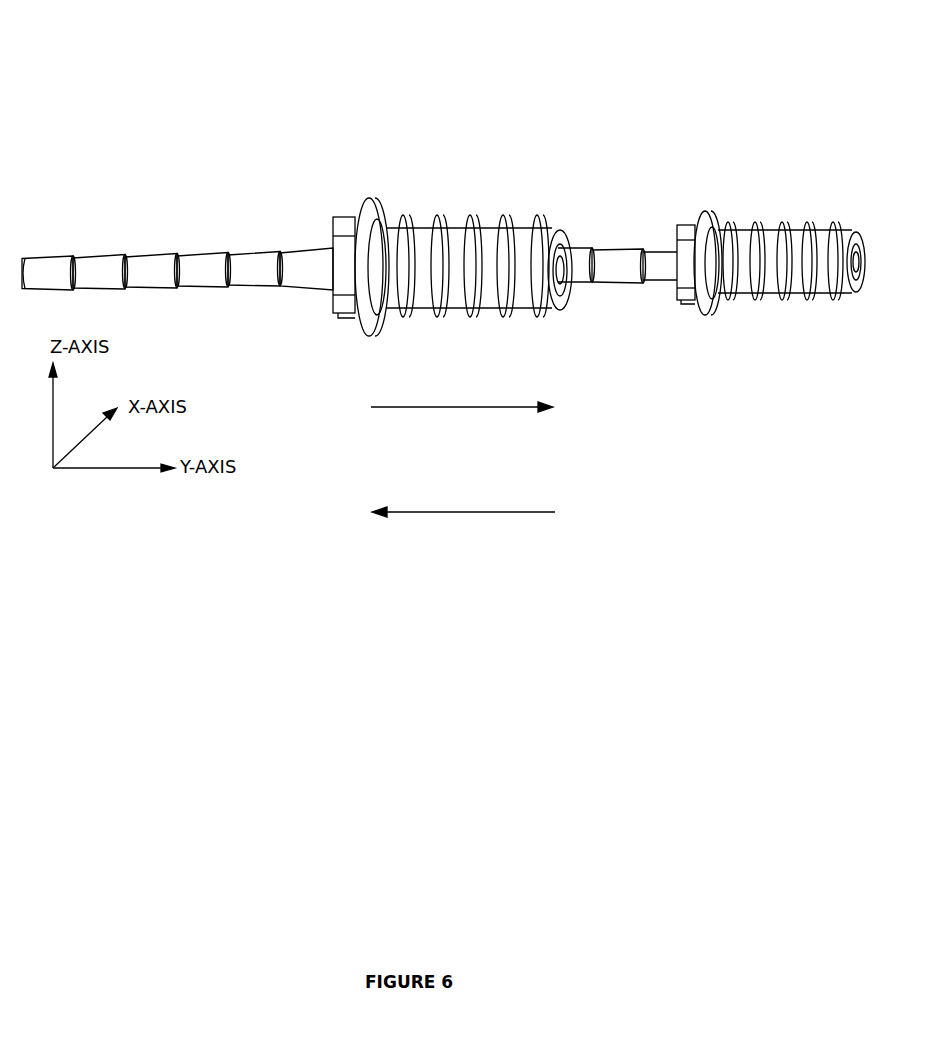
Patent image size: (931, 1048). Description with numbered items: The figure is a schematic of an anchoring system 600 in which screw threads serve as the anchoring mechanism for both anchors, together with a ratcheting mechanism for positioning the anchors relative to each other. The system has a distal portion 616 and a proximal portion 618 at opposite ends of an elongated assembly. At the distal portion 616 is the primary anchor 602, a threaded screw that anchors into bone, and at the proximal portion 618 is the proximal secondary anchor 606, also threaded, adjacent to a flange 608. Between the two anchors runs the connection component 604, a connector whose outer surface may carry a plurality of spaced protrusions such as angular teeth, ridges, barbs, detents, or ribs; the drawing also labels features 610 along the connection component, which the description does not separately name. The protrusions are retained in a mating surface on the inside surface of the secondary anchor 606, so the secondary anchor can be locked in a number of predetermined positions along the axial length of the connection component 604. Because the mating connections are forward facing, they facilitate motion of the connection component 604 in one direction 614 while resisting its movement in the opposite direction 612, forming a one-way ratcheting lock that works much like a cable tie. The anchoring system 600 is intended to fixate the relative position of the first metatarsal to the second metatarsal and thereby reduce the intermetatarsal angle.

The anchoring system 600 is at (443, 223).
The primary anchor 602 is at (743, 230).
The connection component 604 is at (642, 244).
The proximal secondary anchor 606 is at (421, 232).
The flange 608 is at (359, 318).
The shaft joints / break points 610 is at (597, 282).
The opposite direction 612 is at (462, 512).
The one direction 614 is at (445, 407).
The distal portion 616 is at (771, 193).
The proximal portion 618 is at (434, 269).